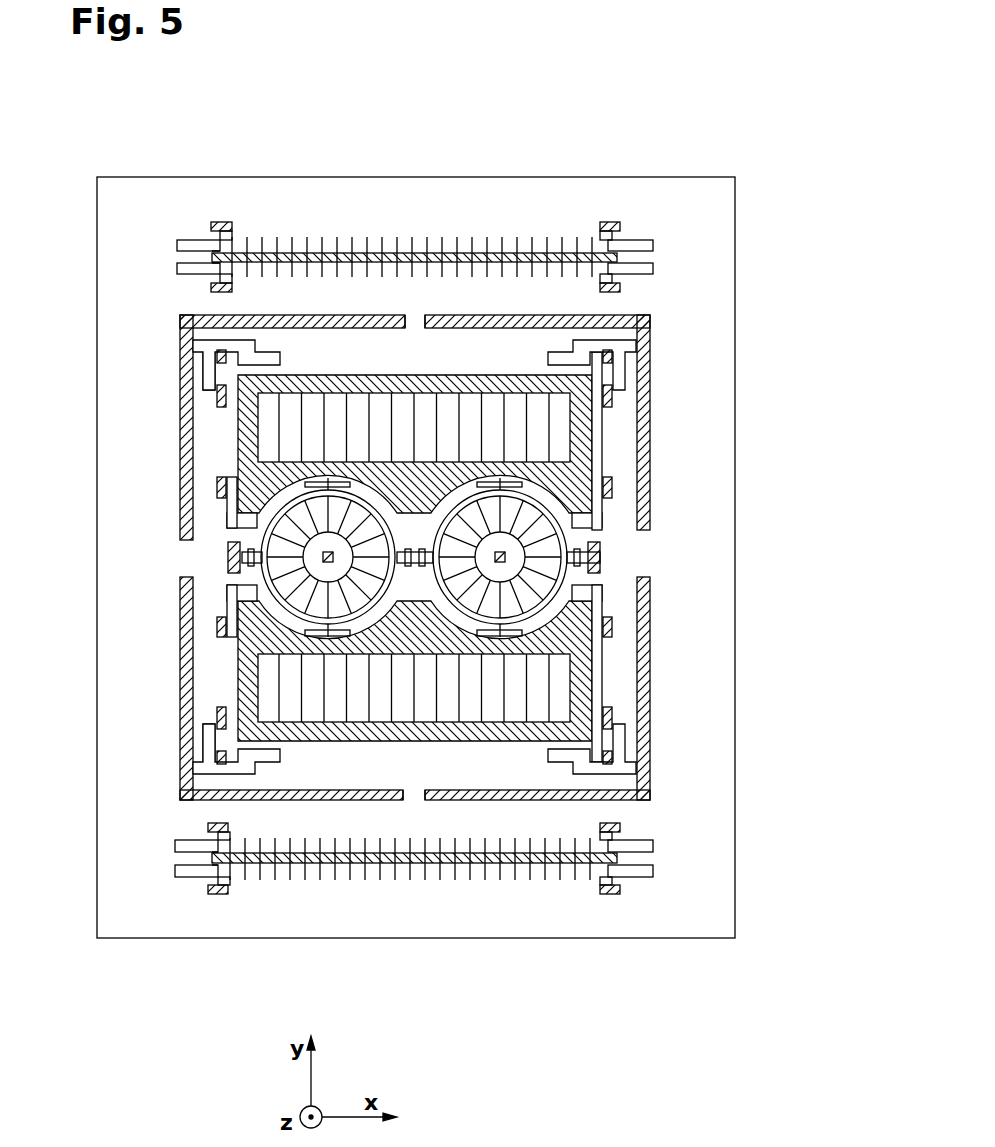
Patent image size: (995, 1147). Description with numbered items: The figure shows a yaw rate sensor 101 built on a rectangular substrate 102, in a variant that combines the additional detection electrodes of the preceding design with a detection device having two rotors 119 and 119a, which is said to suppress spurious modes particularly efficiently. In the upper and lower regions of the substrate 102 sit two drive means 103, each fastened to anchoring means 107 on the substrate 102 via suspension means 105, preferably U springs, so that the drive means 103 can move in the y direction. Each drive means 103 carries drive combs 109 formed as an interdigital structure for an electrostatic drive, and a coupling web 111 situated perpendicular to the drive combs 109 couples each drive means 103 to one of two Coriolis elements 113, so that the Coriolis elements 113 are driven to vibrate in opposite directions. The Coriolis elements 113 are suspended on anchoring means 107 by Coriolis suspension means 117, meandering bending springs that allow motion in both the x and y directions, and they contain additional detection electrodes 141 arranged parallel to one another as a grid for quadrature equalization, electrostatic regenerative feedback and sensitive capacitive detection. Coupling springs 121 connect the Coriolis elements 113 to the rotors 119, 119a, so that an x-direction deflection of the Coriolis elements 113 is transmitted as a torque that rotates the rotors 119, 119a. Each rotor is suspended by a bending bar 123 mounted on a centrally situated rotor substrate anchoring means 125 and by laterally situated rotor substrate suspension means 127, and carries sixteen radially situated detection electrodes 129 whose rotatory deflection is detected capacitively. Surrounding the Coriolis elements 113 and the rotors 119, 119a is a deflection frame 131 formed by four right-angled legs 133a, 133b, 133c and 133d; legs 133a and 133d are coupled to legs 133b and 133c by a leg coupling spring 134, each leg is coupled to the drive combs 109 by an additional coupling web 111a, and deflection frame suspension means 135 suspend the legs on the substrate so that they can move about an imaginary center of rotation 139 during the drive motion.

The yaw rate sensor 101 is at (745, 128).
The substrate 102 is at (735, 192).
The drive means 103 is at (210, 252).
The suspension means 105 is at (178, 243).
The anchoring means 107 is at (216, 222).
The drive combs 109 is at (262, 238).
The coupling web 111 is at (530, 440).
The additional coupling web 111a is at (403, 415).
The Coriolis element 113 is at (308, 374).
The Coriolis suspension means 117 is at (203, 360).
The rotor 119 is at (262, 545).
The rotor 119a is at (525, 483).
The coupling spring 121 is at (460, 470).
The bending bar 123 is at (600, 566).
The rotor substrate anchoring means 125 is at (318, 560).
The rotor substrate suspension means 127 is at (590, 520).
The detection electrodes 129 is at (295, 598).
The deflection frame 131 is at (240, 430).
The leg 133a is at (645, 401).
The leg 133b is at (645, 665).
The leg 133c is at (186, 722).
The leg 133d is at (186, 455).
The leg coupling spring 134 is at (243, 558).
The deflection frame suspension means 135 is at (193, 345).
The imaginary center of rotation 139 is at (180, 318).
The additional detection electrodes 141 is at (413, 415).